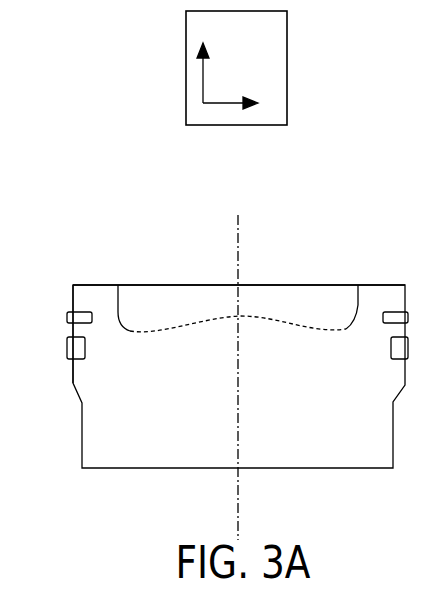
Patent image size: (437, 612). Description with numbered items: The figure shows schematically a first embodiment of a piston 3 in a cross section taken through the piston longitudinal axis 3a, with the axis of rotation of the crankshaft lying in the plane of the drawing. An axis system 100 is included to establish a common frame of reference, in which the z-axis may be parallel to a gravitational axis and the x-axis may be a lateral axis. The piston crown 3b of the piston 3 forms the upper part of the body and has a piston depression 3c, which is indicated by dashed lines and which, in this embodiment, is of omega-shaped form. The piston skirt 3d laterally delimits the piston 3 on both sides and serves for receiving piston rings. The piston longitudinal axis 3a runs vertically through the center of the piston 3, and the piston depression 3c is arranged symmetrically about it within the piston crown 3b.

The axis system 100 is at (186, 65).
The piston 3 is at (318, 246).
The piston longitudinal axis 3a is at (241, 237).
The piston crown 3b is at (103, 276).
The piston depression 3c is at (143, 306).
The piston skirt 3d is at (71, 287).